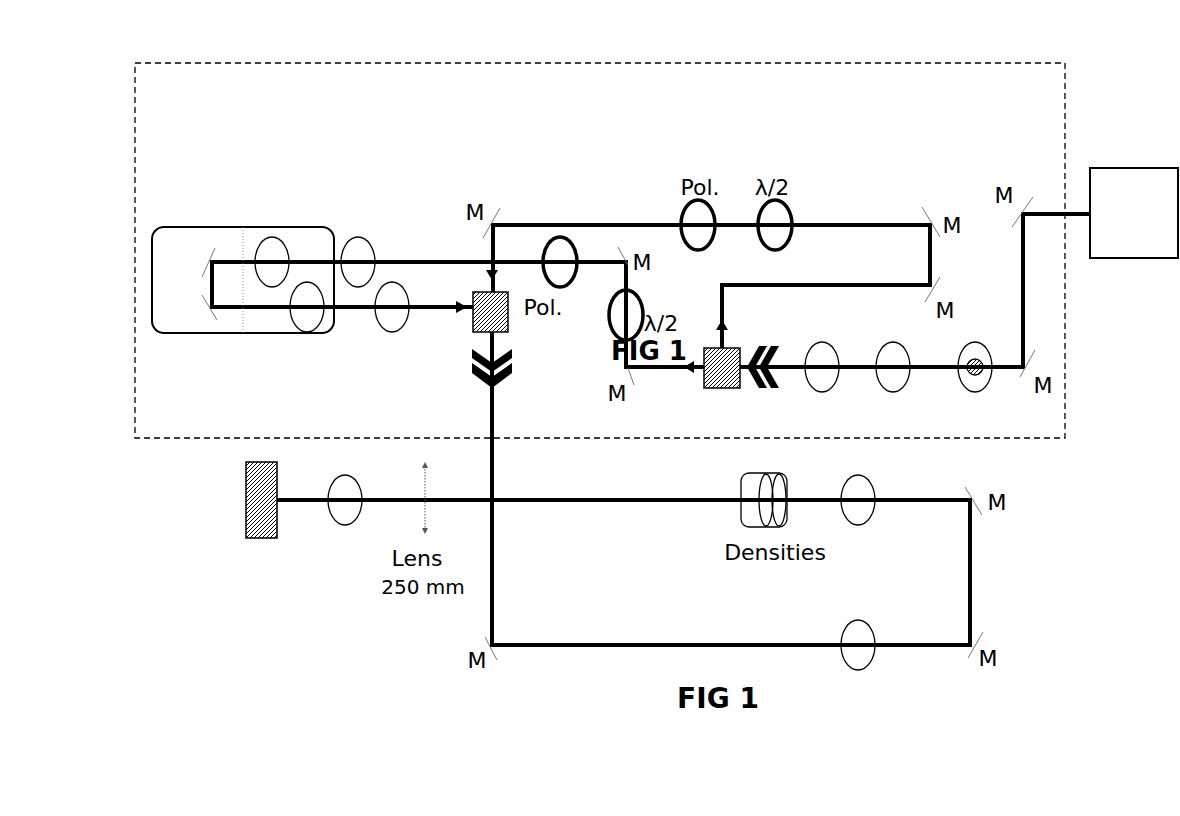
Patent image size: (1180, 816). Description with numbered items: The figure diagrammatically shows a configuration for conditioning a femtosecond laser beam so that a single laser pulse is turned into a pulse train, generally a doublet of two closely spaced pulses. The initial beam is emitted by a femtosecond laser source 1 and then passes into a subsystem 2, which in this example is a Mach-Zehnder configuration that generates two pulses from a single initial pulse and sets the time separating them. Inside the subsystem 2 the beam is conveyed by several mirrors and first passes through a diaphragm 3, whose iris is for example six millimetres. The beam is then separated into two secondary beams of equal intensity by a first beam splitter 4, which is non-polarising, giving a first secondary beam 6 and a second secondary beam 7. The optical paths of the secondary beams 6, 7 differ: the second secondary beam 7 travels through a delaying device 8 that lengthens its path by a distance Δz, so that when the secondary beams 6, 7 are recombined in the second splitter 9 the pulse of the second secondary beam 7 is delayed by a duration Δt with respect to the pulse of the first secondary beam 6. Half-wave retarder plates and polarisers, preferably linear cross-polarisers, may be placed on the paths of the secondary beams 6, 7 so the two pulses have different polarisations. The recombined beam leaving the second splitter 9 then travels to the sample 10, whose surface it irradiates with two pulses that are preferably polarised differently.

The femtosecond laser source 1 is at (1120, 168).
The subsystem 2 is at (1068, 353).
The diaphragm 3 is at (975, 345).
The first beam splitter 4 is at (722, 390).
The first secondary beam 6 is at (833, 207).
The second secondary beam 7 is at (415, 250).
The delaying device 8 is at (288, 216).
The second splitter 9 is at (468, 325).
The sample 10 is at (245, 523).